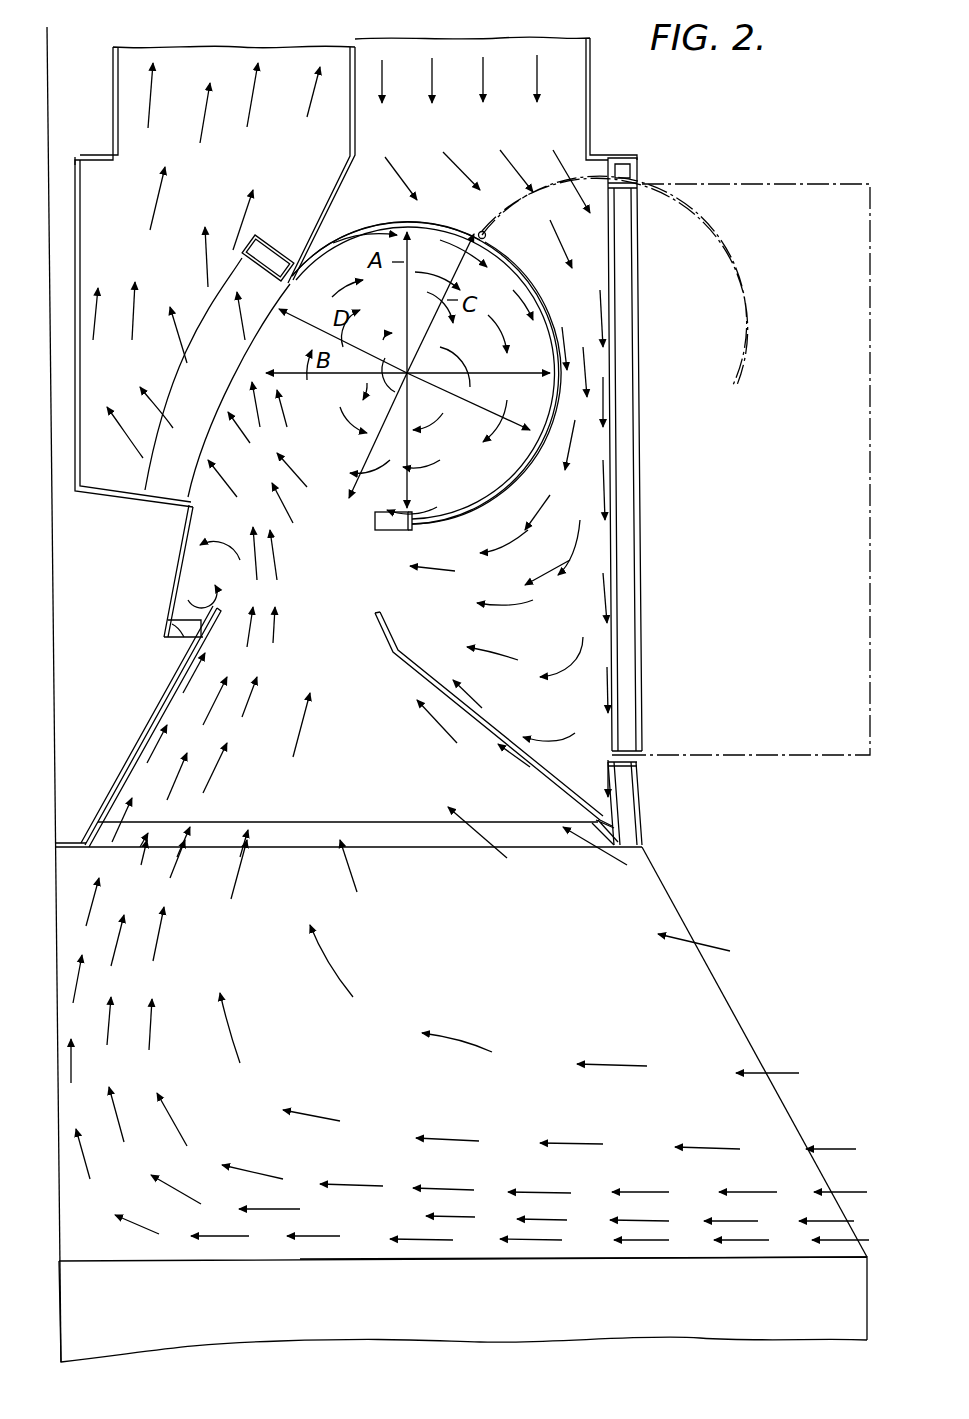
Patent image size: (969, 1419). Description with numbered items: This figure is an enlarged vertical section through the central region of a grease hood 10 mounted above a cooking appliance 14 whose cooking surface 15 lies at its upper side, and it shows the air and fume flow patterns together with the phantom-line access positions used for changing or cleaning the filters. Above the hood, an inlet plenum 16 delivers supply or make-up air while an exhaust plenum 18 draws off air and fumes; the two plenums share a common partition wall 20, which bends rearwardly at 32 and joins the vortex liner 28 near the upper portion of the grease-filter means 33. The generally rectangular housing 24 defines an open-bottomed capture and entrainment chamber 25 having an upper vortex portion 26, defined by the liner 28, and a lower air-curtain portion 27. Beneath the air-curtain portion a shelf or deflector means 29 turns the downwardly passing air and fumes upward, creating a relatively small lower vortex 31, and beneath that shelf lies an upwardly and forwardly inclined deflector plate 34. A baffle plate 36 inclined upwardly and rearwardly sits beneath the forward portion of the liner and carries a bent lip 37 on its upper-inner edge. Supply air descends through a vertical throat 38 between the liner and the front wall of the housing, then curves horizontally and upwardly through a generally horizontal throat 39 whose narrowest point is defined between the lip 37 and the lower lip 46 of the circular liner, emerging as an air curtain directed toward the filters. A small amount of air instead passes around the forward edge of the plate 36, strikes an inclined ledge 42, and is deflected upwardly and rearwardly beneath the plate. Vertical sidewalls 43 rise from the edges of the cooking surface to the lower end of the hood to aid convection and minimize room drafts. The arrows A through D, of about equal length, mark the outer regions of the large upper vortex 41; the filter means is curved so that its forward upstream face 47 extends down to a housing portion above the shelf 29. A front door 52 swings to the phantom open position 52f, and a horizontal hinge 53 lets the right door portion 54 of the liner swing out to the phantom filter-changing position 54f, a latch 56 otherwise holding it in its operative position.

The grease hood 10 is at (700, 138).
The cooking appliance 14 is at (463, 1309).
The cooking surface 15 is at (668, 1258).
The inlet plenum 16 is at (522, 45).
The exhaust plenum 18 is at (240, 25).
The partition wall 20 is at (360, 50).
The housing 24 is at (75, 247).
The capture and entrainment chamber 25 is at (267, 407).
The vortex portion 26 is at (425, 373).
The air-curtain portion 27 is at (218, 692).
The vortex liner 28 is at (397, 228).
The shelf or deflector means 29 is at (173, 624).
The lower vortex 31 is at (200, 565).
The bend 32 is at (330, 207).
The grease-filter means 33 is at (216, 306).
The deflector plate 34 is at (160, 710).
The baffle plate 36 is at (542, 774).
The bent lip 37 is at (378, 648).
The vertical throat 38 is at (598, 378).
The horizontal throat 39 is at (518, 692).
The upper vortex 41 is at (408, 370).
The inclined ledge 42 is at (615, 830).
The vertical sidewalls 43 is at (730, 1004).
The lower lip 46 is at (415, 531).
The forward face 47 is at (238, 364).
The door 52 is at (640, 610).
The door open position 52f is at (783, 190).
The horizontal hinge 53 is at (482, 232).
The door portion 54 is at (512, 478).
The filter-changing position 54f is at (738, 298).
The latch 56 is at (383, 531).